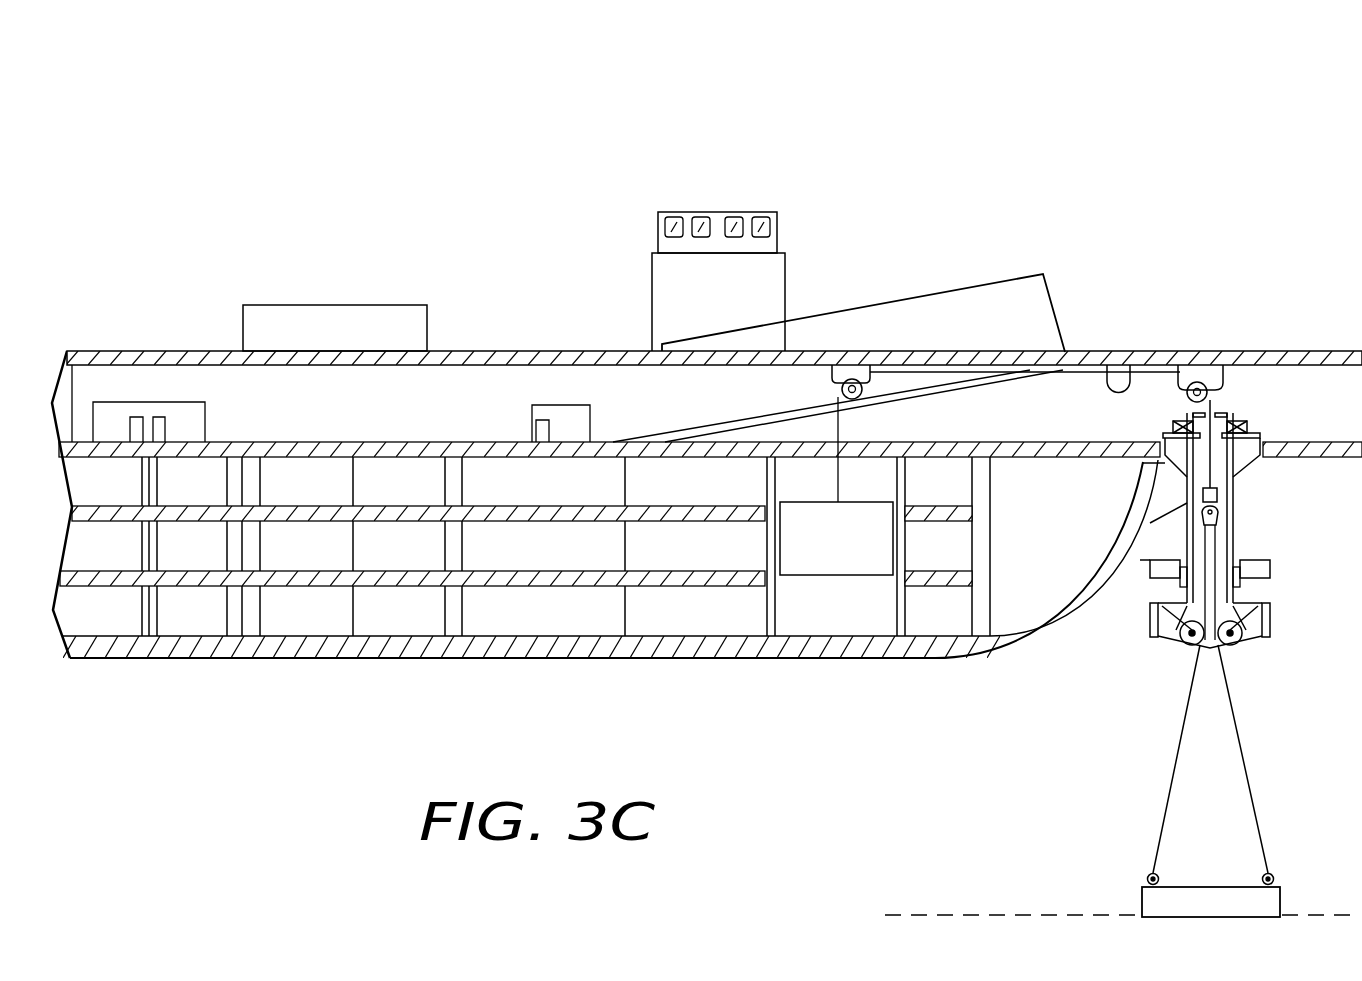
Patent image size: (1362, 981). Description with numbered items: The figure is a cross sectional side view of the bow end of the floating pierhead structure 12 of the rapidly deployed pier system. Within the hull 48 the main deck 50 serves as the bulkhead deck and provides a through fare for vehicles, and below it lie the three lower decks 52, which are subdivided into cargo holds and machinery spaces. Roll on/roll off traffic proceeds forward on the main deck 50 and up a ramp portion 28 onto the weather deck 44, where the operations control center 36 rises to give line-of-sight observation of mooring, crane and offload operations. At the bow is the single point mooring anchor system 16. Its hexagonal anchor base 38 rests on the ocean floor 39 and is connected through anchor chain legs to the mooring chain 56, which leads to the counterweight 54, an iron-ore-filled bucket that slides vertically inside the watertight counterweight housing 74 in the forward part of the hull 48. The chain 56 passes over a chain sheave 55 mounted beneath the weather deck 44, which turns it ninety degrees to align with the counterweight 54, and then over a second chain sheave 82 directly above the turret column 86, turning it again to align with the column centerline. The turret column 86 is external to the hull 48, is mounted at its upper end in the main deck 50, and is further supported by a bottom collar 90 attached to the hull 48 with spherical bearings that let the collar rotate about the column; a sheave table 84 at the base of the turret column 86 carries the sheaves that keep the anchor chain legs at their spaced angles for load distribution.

The floating pierhead structure 12 is at (388, 180).
The single point mooring anchor system 16 is at (1122, 656).
The ramp portion 28 is at (995, 295).
The operations control center 36 is at (718, 212).
The anchor base 38 is at (1224, 887).
The ocean floor 39 is at (1012, 912).
The weather deck 44 is at (511, 351).
The hull 48 is at (556, 662).
The main deck 50 is at (396, 416).
The lower decks 52 is at (330, 508).
The counterweight 54 is at (807, 568).
The chain sheave 55 is at (830, 351).
The mooring chain 56 is at (1140, 368).
The counterweight housing 74 is at (898, 603).
The chain sheave 82 is at (1223, 365).
The sheave table 84 is at (1272, 618).
The turret column 86 is at (1230, 511).
The bottom collar 90 is at (1272, 570).